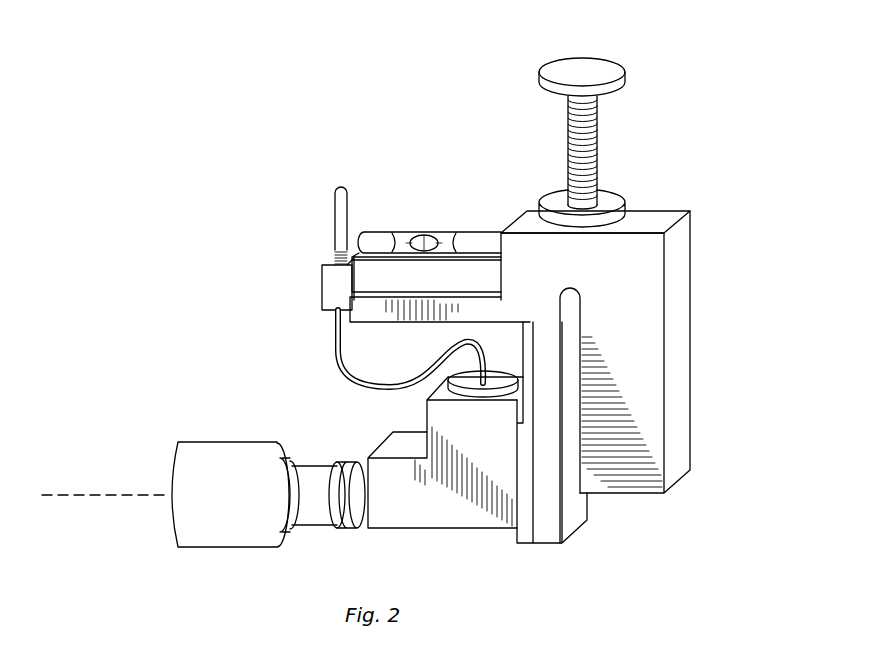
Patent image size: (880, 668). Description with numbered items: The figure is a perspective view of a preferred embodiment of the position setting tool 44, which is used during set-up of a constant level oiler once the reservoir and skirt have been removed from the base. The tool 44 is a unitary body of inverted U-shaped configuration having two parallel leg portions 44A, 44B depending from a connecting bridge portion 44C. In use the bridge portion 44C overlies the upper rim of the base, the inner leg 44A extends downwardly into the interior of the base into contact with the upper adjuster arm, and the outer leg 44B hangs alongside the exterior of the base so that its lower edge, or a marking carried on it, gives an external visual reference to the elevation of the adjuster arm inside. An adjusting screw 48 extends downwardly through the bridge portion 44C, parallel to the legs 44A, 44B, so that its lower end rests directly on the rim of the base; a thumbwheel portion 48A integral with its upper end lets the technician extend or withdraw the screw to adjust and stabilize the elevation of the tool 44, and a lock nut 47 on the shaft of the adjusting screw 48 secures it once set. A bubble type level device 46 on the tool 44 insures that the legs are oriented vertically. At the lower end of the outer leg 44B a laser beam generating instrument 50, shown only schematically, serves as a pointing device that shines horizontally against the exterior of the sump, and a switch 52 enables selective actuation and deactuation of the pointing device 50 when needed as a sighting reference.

The position setting tool 44 is at (701, 359).
The inner leg portion 44A is at (629, 480).
The outer leg portion 44B is at (545, 528).
The bridge portion 44C is at (613, 289).
The bubble type level device 46 is at (427, 235).
The lock nut 47 is at (631, 203).
The adjusting screw 48 is at (599, 147).
The thumbwheel portion 48A is at (583, 70).
The laser beam generating instrument 50 is at (263, 428).
The switch 52 is at (333, 233).